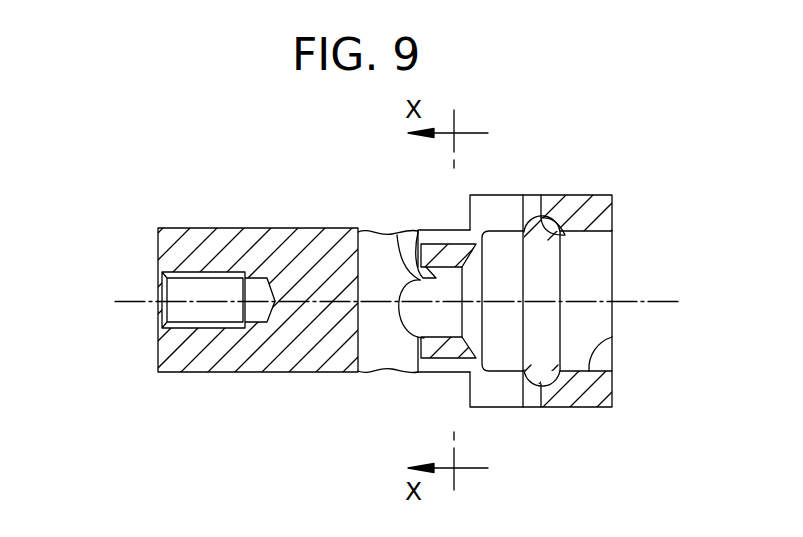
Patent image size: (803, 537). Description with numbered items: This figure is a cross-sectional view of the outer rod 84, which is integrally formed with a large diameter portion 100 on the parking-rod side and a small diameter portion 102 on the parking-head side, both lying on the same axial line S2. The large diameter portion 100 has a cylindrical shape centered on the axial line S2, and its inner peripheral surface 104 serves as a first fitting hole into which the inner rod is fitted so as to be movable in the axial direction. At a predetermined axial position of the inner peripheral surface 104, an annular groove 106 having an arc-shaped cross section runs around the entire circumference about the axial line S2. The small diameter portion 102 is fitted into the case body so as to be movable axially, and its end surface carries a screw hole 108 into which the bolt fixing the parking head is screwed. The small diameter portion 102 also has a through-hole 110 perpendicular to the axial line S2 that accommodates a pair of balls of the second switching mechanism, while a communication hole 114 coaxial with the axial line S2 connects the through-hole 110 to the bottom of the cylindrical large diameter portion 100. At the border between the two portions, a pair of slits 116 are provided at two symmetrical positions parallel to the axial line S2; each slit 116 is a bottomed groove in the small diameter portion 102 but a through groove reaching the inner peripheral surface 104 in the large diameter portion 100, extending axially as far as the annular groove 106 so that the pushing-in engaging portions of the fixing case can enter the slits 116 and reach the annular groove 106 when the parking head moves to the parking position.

The outer rod 84 is at (306, 150).
The large diameter portion 100 is at (574, 386).
The small diameter portion 102 is at (262, 252).
The inner peripheral surface 104 is at (613, 339).
The annular groove 106 is at (561, 232).
The screw hole 108 is at (158, 313).
The through-hole 110 is at (382, 345).
The communication hole 114 is at (406, 238).
The slit 116 is at (493, 208).
The axial line S2 is at (379, 303).